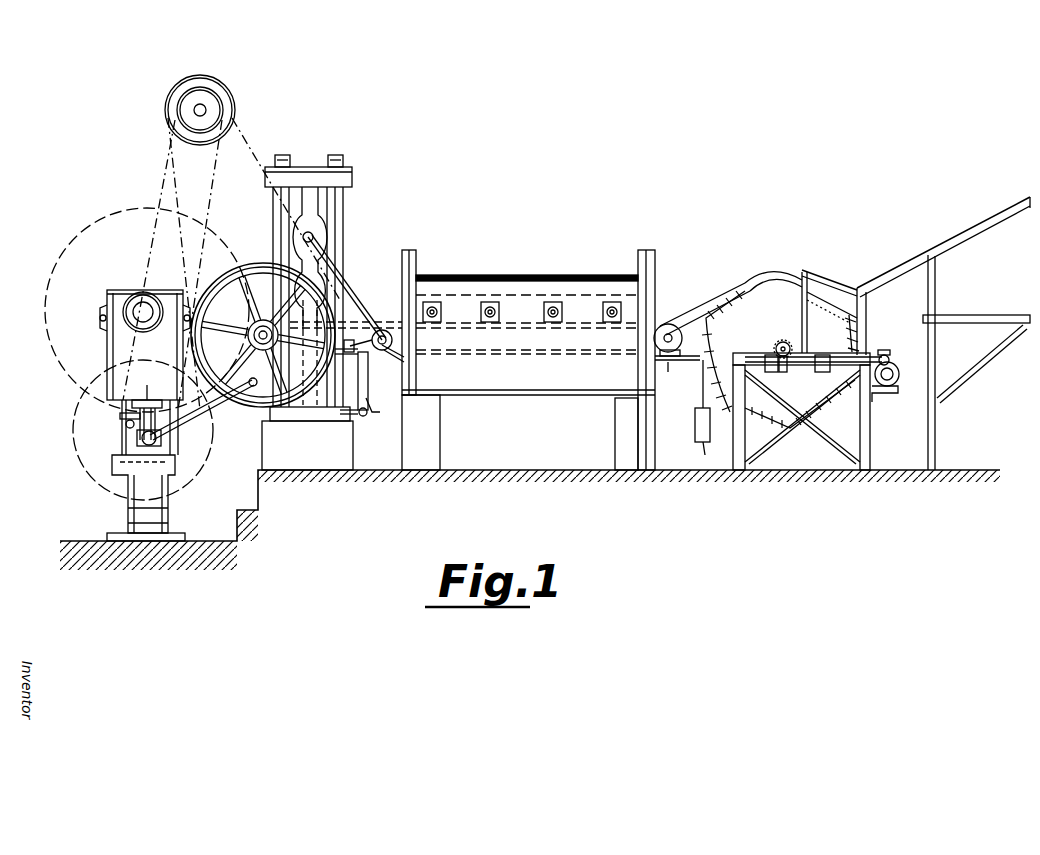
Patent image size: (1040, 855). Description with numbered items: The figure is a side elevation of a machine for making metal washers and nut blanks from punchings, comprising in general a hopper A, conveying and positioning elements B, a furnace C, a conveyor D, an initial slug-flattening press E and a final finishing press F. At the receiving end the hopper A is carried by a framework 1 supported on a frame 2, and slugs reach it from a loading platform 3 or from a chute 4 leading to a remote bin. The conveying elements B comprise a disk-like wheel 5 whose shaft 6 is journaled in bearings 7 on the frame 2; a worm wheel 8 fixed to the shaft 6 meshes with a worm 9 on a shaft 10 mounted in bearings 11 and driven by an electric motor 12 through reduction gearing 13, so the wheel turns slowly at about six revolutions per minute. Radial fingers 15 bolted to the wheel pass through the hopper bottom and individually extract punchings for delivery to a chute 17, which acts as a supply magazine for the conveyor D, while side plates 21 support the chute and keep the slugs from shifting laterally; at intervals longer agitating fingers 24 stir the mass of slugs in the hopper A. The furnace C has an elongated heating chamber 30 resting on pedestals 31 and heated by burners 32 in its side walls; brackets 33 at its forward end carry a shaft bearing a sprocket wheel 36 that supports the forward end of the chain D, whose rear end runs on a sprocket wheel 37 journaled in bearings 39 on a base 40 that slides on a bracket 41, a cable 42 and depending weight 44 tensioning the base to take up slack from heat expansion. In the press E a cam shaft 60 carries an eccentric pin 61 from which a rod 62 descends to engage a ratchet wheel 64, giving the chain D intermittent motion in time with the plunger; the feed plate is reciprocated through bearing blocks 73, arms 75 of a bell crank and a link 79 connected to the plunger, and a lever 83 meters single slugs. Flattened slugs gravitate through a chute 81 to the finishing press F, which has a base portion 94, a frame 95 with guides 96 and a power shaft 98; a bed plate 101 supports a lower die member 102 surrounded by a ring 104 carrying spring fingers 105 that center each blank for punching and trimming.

The framework 1 is at (936, 291).
The frame 2 is at (815, 370).
The loading platform 3 is at (982, 316).
The chute 4 is at (962, 238).
The disk-like wheel 5 is at (779, 302).
The shaft 6 is at (774, 353).
The bearings 7 is at (800, 355).
The worm wheel 8 is at (783, 342).
The worm 9 is at (785, 368).
The shaft 10 is at (840, 368).
The bearings 11 is at (878, 352).
The electric motor 12 is at (906, 374).
The reduction gearing 13 is at (890, 360).
The finger 15 is at (713, 351).
The chute 17 is at (703, 300).
The side plates or guides 21 is at (776, 276).
The agitating fingers 24 is at (786, 424).
The heating chamber 30 is at (576, 288).
The pillars or pedestals 31 is at (480, 430).
The burners 32 is at (481, 312).
The brackets 33 is at (392, 360).
The sprocket wheel 36 is at (346, 309).
The sprocket wheel 37 is at (668, 323).
The bearings 39 is at (656, 340).
The base 40 is at (656, 358).
The bracket 41 is at (678, 362).
The cable 42 is at (698, 396).
The weight 44 is at (711, 455).
The cam shaft 60 is at (308, 232).
The eccentric pin 61 is at (313, 237).
The rod 62 is at (350, 290).
The ratchet wheel 64 is at (374, 334).
The bearing blocks 73 is at (340, 390).
The arms 75 is at (354, 381).
The link or rod 79 is at (372, 412).
The chute 81 is at (226, 397).
The lever 83 is at (335, 352).
The base portion 94 is at (170, 478).
The frame 95 is at (145, 345).
The guides 96 is at (120, 416).
The power shaft 98 is at (150, 306).
The bed plate 101 is at (155, 457).
The lower die member 102 is at (136, 452).
The ring 104 is at (120, 440).
The spring fingers 105 is at (152, 408).
The hopper A is at (838, 280).
The conveying and positioning elements B is at (741, 319).
The furnace C is at (528, 358).
The conveyor D is at (527, 353).
The slug-flattening press E is at (307, 298).
The finishing press F is at (69, 352).